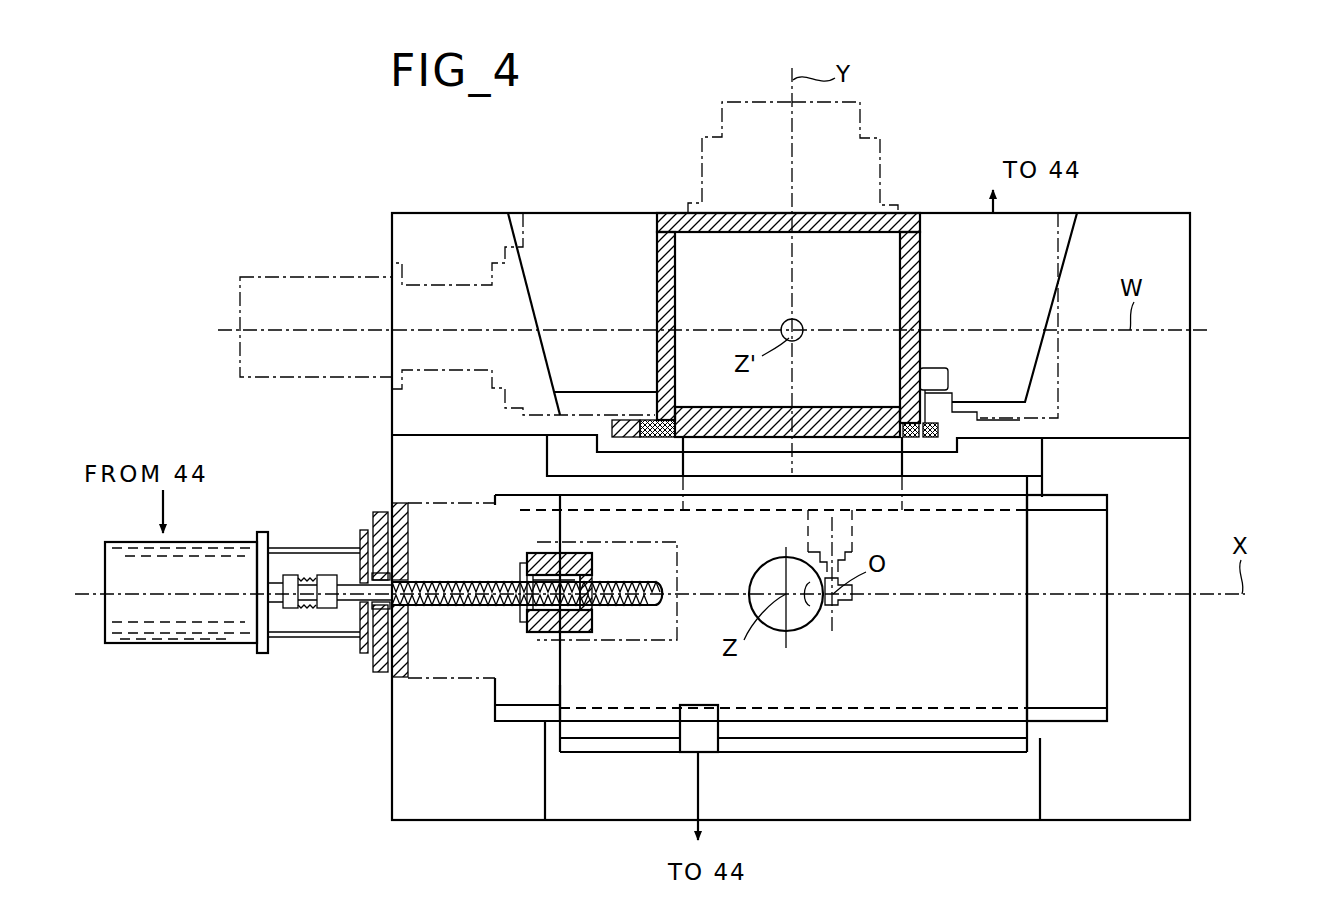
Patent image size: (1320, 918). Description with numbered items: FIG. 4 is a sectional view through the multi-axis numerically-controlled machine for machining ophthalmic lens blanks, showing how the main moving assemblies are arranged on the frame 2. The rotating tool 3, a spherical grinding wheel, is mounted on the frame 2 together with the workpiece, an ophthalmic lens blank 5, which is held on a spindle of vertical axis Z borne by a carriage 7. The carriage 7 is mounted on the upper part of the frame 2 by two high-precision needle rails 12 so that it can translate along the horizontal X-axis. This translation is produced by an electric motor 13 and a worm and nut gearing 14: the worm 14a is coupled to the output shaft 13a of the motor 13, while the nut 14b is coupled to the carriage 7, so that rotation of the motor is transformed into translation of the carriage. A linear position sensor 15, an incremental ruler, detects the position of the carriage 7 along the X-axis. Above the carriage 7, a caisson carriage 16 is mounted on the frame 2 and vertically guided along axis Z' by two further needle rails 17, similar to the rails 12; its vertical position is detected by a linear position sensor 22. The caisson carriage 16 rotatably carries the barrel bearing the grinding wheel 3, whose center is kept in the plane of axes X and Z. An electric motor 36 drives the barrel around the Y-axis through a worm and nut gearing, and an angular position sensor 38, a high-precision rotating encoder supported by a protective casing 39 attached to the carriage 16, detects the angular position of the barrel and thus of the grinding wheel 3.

The frame 2 is at (1198, 758).
The rotating tool 3 is at (853, 603).
The ophthalmic lens blank 5 is at (800, 620).
The carriage 7 is at (557, 685).
The needle rails 12 is at (1050, 488).
The electric motor 13 is at (177, 645).
The output shaft 13a is at (282, 575).
The worm and nut gearing 14 is at (518, 590).
The worm 14a is at (430, 580).
The nut 14b is at (576, 630).
The linear position sensor 15 is at (693, 740).
The caisson carriage 16 is at (920, 237).
The needle rails 17 is at (652, 414).
The linear position sensor 22 is at (940, 396).
The electric motor 36 is at (295, 277).
The angular position sensor 38 is at (860, 112).
The protective casing 39 is at (702, 152).